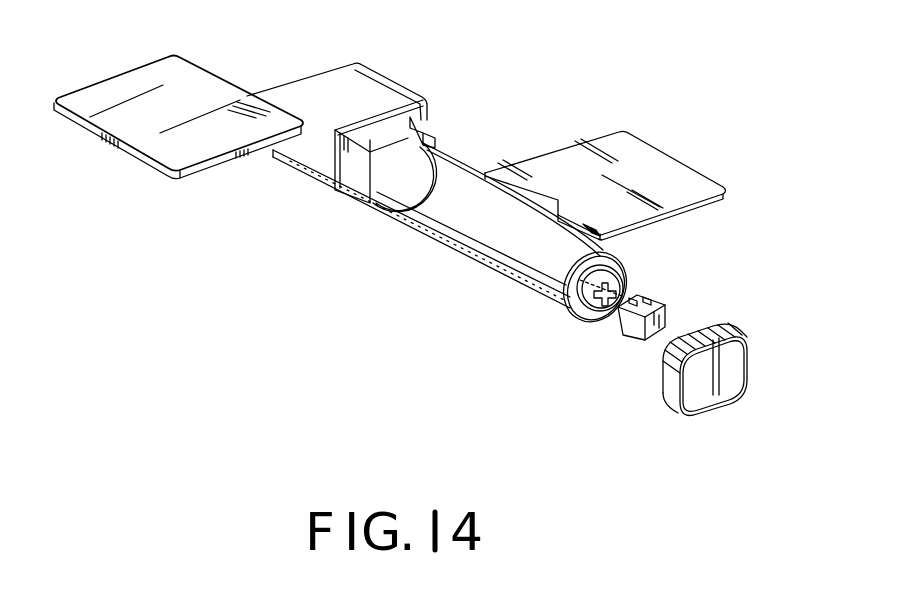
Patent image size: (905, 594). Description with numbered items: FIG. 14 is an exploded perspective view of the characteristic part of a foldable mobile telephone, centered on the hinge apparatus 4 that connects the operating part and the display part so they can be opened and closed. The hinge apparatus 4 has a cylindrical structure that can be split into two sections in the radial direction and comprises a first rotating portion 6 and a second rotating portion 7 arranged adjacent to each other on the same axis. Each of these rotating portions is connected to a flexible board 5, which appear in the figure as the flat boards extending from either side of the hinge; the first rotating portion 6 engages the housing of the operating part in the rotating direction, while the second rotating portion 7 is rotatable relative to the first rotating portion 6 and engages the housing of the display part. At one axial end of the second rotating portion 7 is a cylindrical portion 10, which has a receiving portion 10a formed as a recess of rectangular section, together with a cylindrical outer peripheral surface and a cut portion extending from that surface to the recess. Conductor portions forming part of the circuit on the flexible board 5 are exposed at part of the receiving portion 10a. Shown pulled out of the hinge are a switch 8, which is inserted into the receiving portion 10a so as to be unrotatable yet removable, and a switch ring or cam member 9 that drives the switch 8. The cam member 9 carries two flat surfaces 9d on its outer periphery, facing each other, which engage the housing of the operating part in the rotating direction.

The hinge apparatus 4 is at (513, 284).
The flexible board 5 is at (140, 67).
The first rotating portion 6 is at (335, 132).
The second rotating portion 7 is at (452, 210).
The switch 8 is at (632, 327).
The switch ring or cam member 9 is at (740, 328).
The flat surfaces 9d is at (748, 362).
The cylindrical portion 10 is at (575, 315).
The receiving portion 10a is at (617, 292).